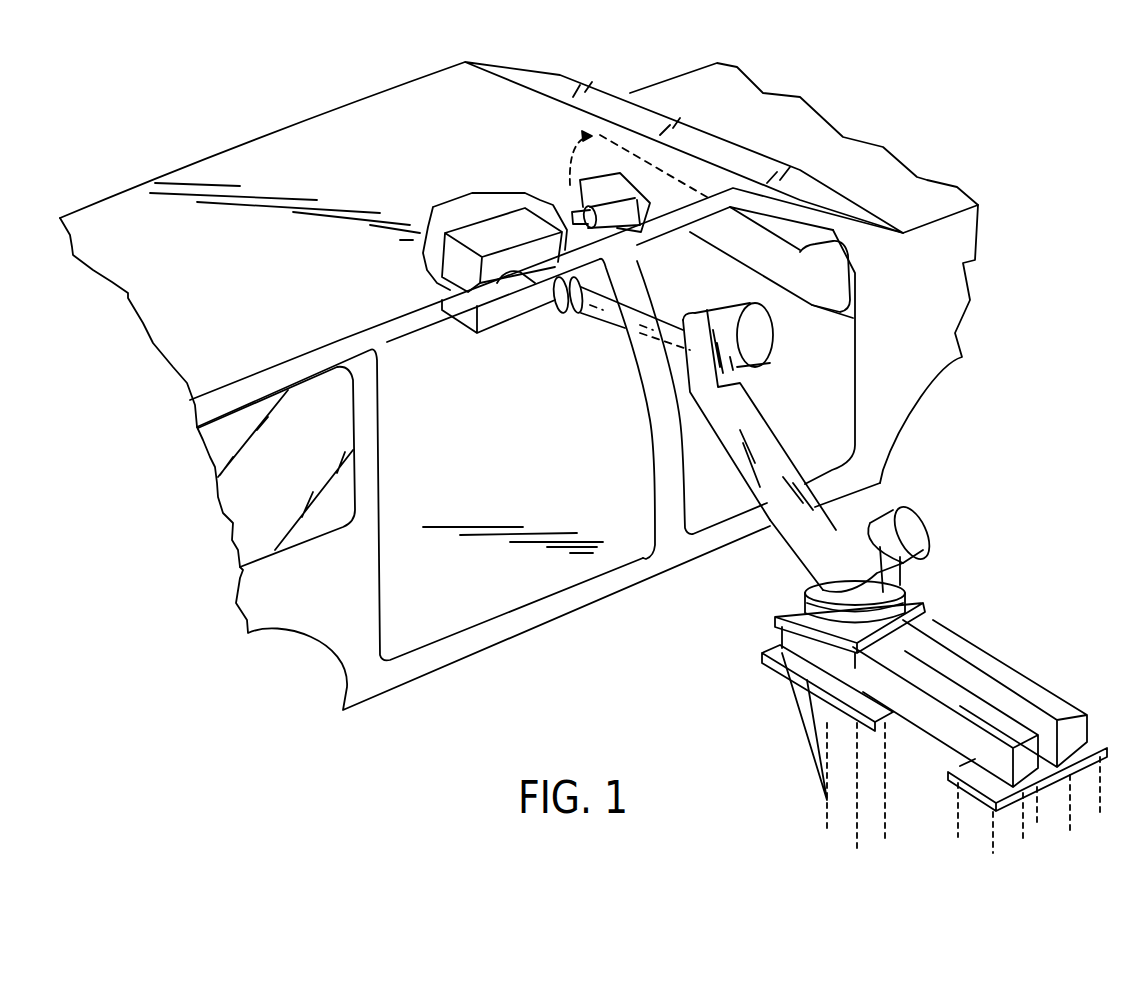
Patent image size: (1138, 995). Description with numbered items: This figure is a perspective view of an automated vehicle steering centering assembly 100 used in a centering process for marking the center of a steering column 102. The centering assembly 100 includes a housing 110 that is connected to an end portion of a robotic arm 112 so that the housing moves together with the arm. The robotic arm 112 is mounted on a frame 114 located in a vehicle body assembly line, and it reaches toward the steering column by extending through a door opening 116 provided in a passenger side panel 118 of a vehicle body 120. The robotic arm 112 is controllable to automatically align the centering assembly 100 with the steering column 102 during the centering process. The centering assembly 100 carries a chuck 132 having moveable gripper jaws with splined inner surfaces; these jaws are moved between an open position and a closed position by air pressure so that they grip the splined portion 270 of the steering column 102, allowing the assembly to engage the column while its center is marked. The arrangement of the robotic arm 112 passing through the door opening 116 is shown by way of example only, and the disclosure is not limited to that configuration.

The automated vehicle steering centering assembly 100 is at (510, 355).
The steering column 102 is at (578, 204).
The housing 110 is at (475, 232).
The robotic arm 112 is at (602, 312).
The frame 114 is at (838, 797).
The door opening 116 is at (840, 407).
The passenger side panel 118 is at (905, 363).
The vehicle body 120 is at (918, 181).
The chuck 132 is at (538, 199).
The splined portion 270 is at (633, 248).